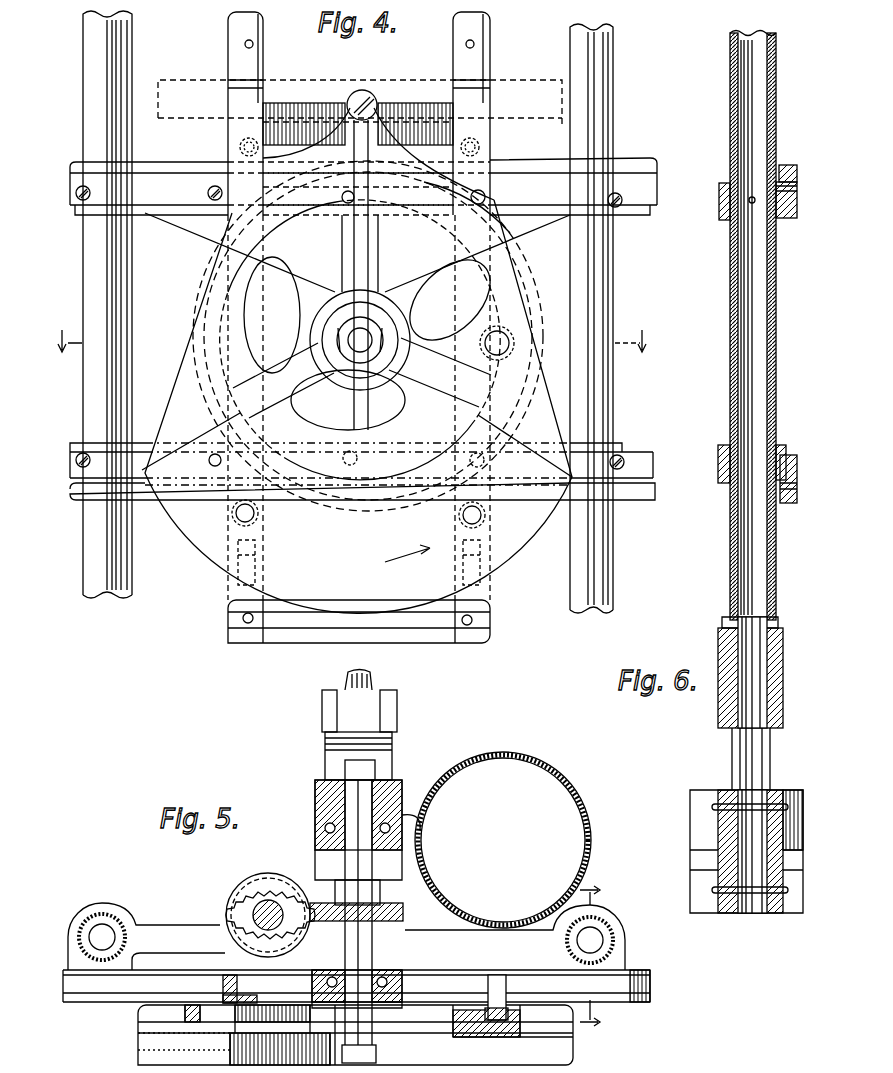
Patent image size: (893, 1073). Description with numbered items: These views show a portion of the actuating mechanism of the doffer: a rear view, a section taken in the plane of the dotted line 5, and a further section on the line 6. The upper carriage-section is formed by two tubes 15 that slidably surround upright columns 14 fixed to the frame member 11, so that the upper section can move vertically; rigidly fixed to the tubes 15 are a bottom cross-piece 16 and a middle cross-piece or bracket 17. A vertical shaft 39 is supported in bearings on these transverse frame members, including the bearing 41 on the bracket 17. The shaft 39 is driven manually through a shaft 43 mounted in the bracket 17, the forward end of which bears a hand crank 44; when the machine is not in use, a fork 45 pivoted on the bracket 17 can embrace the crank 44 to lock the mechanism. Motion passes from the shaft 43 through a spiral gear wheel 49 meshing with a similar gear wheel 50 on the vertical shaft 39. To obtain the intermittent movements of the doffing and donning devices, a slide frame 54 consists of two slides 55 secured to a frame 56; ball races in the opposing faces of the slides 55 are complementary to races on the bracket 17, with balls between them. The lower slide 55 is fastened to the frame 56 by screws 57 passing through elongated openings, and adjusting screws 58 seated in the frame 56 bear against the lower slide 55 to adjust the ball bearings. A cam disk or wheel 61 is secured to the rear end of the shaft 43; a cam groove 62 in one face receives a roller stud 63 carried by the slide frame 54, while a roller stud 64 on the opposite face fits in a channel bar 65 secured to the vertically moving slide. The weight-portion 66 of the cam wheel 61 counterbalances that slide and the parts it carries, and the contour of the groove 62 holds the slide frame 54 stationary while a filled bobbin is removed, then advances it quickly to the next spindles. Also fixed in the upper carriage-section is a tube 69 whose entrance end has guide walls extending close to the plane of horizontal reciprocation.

In FIG. 4, the cross-piece 5 is at (351, 342).
In FIG. 5, the cross-piece 6 is at (591, 957).
In FIG. 6, the frame member 11 is at (772, 913).
In FIG. 6, the upright column 14 is at (770, 752).
In FIG. 4, the tube 15 is at (83, 78).
In FIG. 5, the tube 15 is at (93, 915).
In FIG. 6, the tube 15 is at (730, 82).
In FIG. 6, the bottom cross-piece 16 is at (718, 636).
In FIG. 4, the middle cross-piece or bracket 17 is at (362, 340).
In FIG. 5, the middle cross-piece or bracket 17 is at (356, 948).
In FIG. 5, the vertical shaft 39 is at (264, 905).
In FIG. 5, the bearing 41 is at (221, 871).
In FIG. 4, the shaft 43 is at (364, 338).
In FIG. 5, the shaft 43 is at (360, 862).
In FIG. 5, the hand crank 44 is at (372, 680).
In FIG. 5, the fork 45 is at (387, 712).
In FIG. 5, the spiral gear wheel 49 is at (370, 913).
In FIG. 5, the spiral gear wheel 50 is at (284, 872).
In FIG. 4, the slide frame 54 is at (363, 171).
In FIG. 4, the slide 55 is at (162, 165).
In FIG. 5, the slide 55 is at (46, 1003).
In FIG. 6, the slide 55 is at (787, 167).
In FIG. 4, the frame 56 is at (490, 105).
In FIG. 5, the frame 56 is at (222, 998).
In FIG. 4, the screw 57 is at (258, 513).
In FIG. 4, the adjusting screw 58 is at (240, 586).
In FIG. 4, the cam disk or wheel 61 is at (535, 332).
In FIG. 4, the cam groove 62 is at (530, 300).
In FIG. 4, the roller stud 63 is at (503, 357).
In FIG. 4, the roller stud 64 is at (362, 90).
In FIG. 4, the channel bar 65 is at (182, 80).
In FIG. 4, the weight-portion 66 is at (512, 527).
In FIG. 5, the tube 69 is at (586, 812).